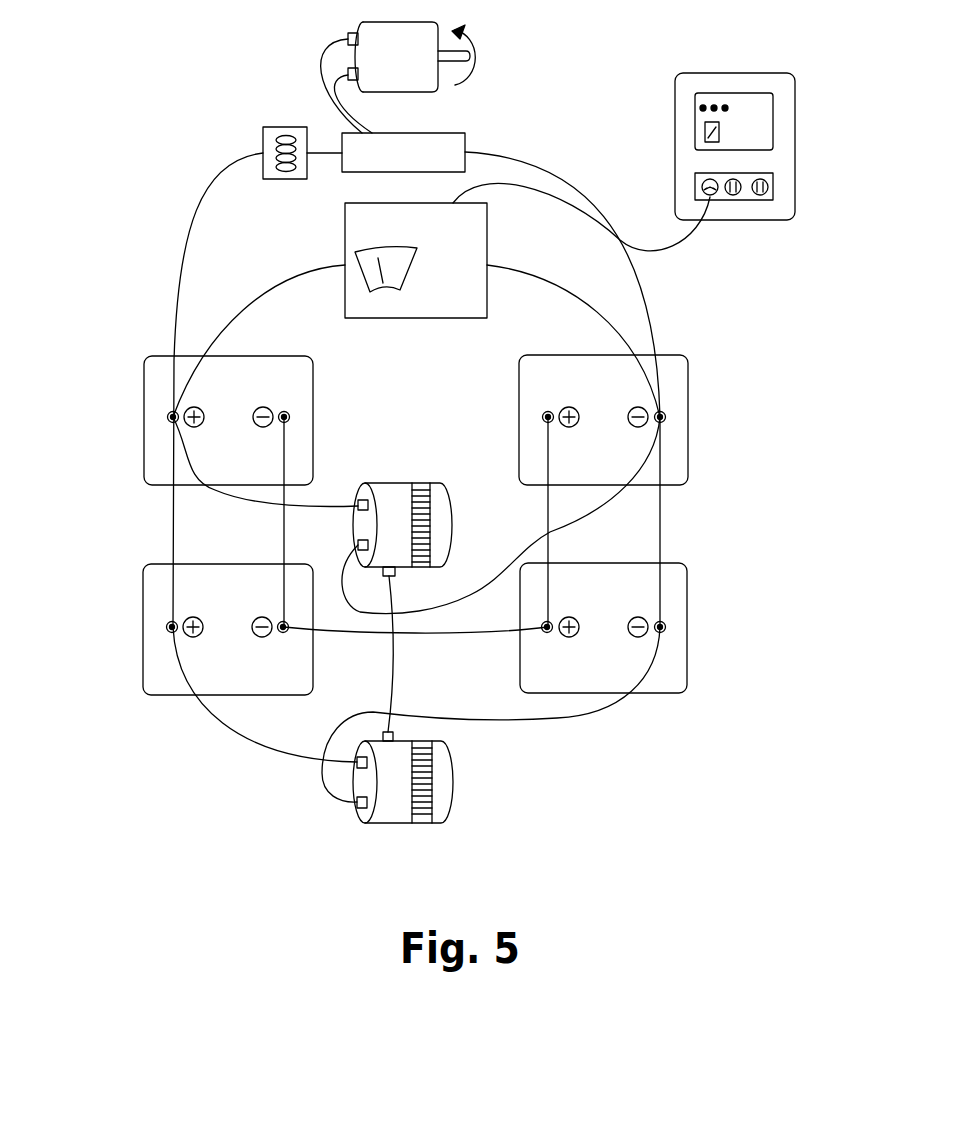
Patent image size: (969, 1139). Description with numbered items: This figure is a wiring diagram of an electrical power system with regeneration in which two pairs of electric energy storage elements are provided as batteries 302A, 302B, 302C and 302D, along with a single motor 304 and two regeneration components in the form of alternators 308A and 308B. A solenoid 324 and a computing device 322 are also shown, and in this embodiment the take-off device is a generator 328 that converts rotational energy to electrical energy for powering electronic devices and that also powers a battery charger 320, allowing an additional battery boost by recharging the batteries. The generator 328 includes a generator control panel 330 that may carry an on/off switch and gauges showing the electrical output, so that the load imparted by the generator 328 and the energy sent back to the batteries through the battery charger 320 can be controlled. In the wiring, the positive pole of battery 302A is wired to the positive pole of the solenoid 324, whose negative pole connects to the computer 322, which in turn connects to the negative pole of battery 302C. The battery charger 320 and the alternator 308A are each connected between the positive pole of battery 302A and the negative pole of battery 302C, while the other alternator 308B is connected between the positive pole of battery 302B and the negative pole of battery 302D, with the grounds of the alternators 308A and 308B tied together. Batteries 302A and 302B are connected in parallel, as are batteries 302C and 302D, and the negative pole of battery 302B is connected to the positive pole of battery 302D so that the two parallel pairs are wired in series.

The battery 302A is at (144, 417).
The battery 302B is at (143, 627).
The battery 302C is at (688, 417).
The battery 302D is at (688, 627).
The motor 304 is at (422, 75).
The regeneration component (alternator) 308A is at (390, 482).
The regeneration component (alternator) 308B is at (385, 824).
The battery charger 320 is at (438, 318).
The computing device 322 is at (420, 167).
The solenoid 324 is at (285, 127).
The generator 328 is at (774, 119).
The generator control panel 330 is at (752, 105).